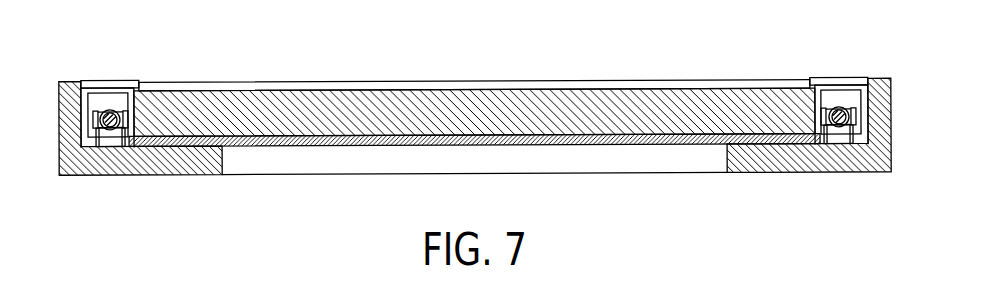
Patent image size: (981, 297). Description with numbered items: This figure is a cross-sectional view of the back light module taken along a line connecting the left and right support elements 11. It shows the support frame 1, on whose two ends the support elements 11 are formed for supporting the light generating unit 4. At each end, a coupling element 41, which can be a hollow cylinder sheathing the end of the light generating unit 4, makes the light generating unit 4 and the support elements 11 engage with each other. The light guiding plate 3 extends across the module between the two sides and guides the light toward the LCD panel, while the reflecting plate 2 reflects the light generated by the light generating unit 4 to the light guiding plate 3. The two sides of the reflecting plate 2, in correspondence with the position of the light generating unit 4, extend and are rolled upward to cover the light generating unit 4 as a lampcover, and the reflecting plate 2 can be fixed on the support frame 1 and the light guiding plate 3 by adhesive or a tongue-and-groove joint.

The support frame 1 is at (72, 160).
The support elements 11 is at (97, 135).
The reflecting plate 2 is at (108, 108).
The light guiding plate 3 is at (466, 105).
The light generating unit 4 is at (114, 112).
The coupling elements 41 is at (101, 106).